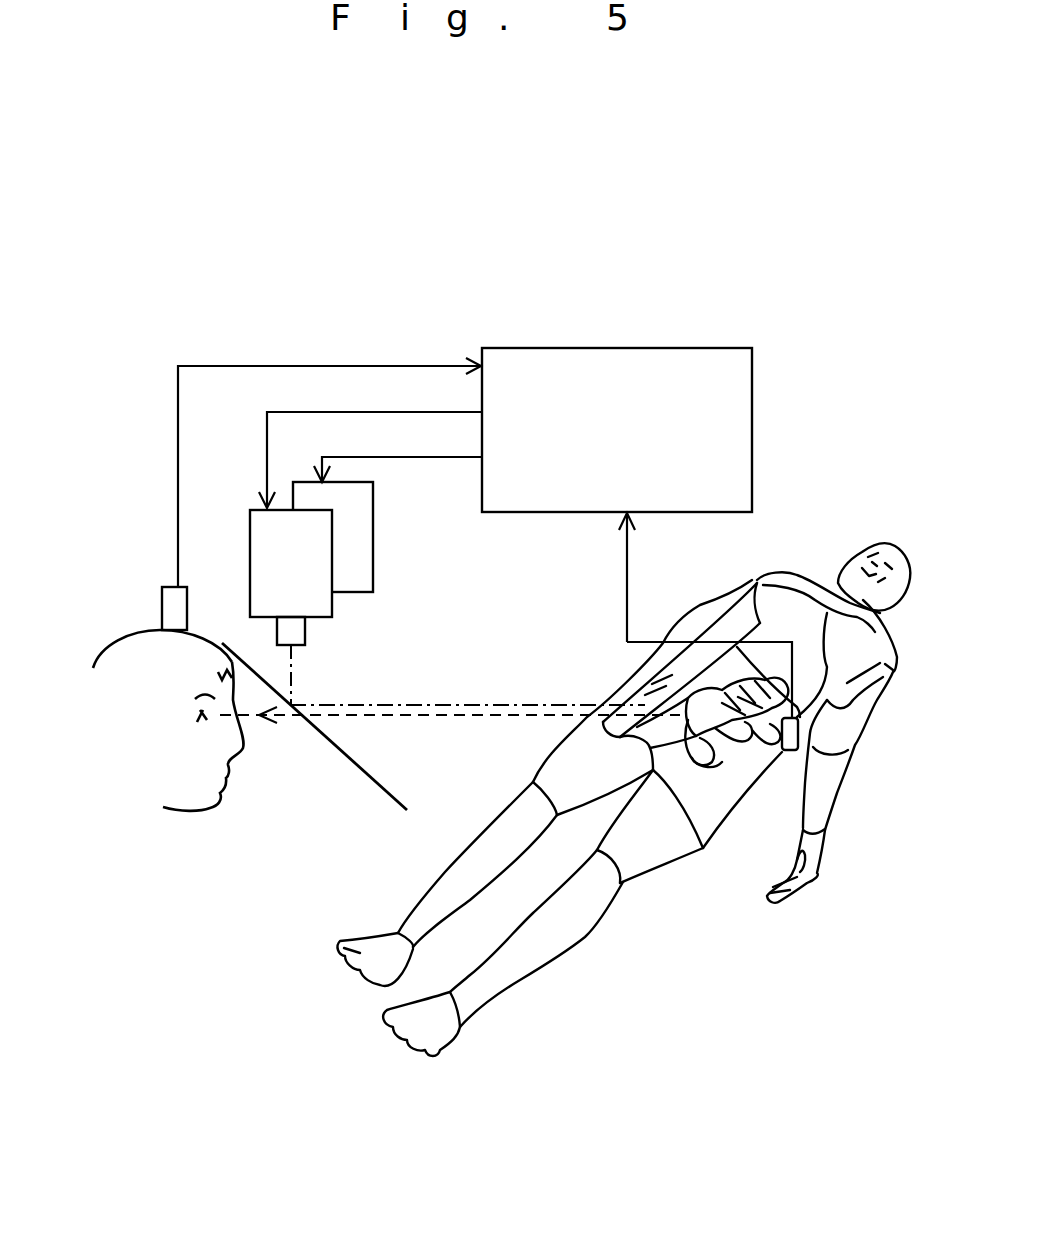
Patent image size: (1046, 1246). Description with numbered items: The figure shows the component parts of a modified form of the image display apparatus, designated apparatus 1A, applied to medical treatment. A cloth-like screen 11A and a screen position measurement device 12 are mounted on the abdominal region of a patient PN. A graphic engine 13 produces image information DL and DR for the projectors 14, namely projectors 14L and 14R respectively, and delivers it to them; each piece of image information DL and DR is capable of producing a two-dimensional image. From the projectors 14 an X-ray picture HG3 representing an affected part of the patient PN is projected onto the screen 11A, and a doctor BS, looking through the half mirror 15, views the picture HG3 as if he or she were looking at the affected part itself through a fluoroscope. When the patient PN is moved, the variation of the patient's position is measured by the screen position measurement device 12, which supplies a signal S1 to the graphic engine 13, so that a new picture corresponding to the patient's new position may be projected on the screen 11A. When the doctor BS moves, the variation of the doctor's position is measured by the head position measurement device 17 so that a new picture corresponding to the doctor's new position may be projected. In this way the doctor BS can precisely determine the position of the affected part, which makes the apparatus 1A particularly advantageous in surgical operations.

The apparatus 1A is at (448, 219).
The graphic engine 13 is at (713, 362).
The projectors 14 is at (211, 532).
The projector 14L is at (313, 497).
The projector 14R is at (280, 542).
The head position measurement device 17 is at (162, 606).
The half mirror 15 is at (377, 788).
The screen position measurement device 12 is at (802, 727).
The cloth-like screen 11A is at (624, 799).
The X-ray picture HG3 is at (707, 694).
The doctor BS is at (172, 788).
The patient PN is at (798, 585).
The image information DR is at (340, 397).
The image information DL is at (400, 442).
The sensor signal S1 is at (627, 556).